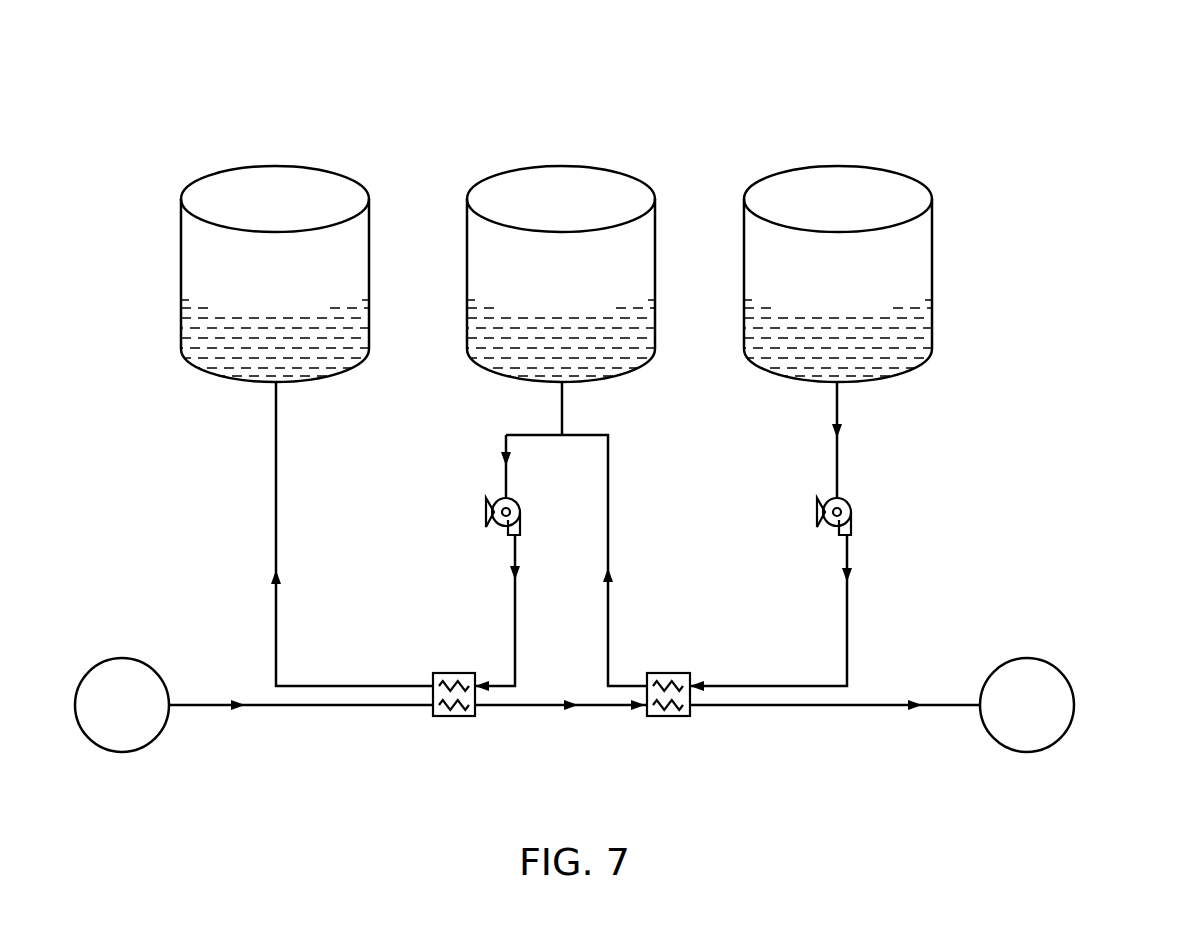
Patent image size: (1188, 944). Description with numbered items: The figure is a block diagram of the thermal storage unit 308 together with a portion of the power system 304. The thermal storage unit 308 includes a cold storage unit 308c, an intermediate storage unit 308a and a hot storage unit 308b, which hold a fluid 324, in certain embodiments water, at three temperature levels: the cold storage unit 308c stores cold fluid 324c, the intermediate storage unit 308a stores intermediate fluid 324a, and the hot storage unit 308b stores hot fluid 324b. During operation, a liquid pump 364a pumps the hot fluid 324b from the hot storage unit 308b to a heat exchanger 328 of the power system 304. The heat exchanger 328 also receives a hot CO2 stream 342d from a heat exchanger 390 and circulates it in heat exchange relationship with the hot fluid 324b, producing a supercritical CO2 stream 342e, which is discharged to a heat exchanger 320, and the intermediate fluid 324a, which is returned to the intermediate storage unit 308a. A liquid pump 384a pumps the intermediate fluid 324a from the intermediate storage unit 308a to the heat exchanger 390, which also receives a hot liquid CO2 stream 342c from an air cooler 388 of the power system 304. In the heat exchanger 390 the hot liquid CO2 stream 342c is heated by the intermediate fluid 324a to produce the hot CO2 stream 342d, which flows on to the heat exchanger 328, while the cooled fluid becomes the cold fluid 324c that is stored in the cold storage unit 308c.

The thermal storage unit 308 is at (1032, 77).
The intermediate storage unit 308a is at (586, 214).
The hot storage unit 308b is at (863, 214).
The cold storage unit 308c is at (300, 214).
The fluid 324 is at (198, 360).
The intermediate fluid 324a is at (500, 459).
The hot fluid 324b is at (843, 432).
The cold fluid 324c is at (272, 578).
The liquid pump 384a is at (485, 513).
The liquid pump 364a is at (853, 509).
The air cooler 388 is at (99, 717).
The heat exchanger 320 is at (1004, 717).
The hot liquid CO2 stream 342c is at (242, 707).
The hot CO2 stream 342d is at (577, 707).
The supercritical CO2 stream 342e is at (922, 707).
The heat exchanger 390 is at (457, 717).
The heat exchanger 328 is at (672, 717).
The power system 304 is at (338, 762).